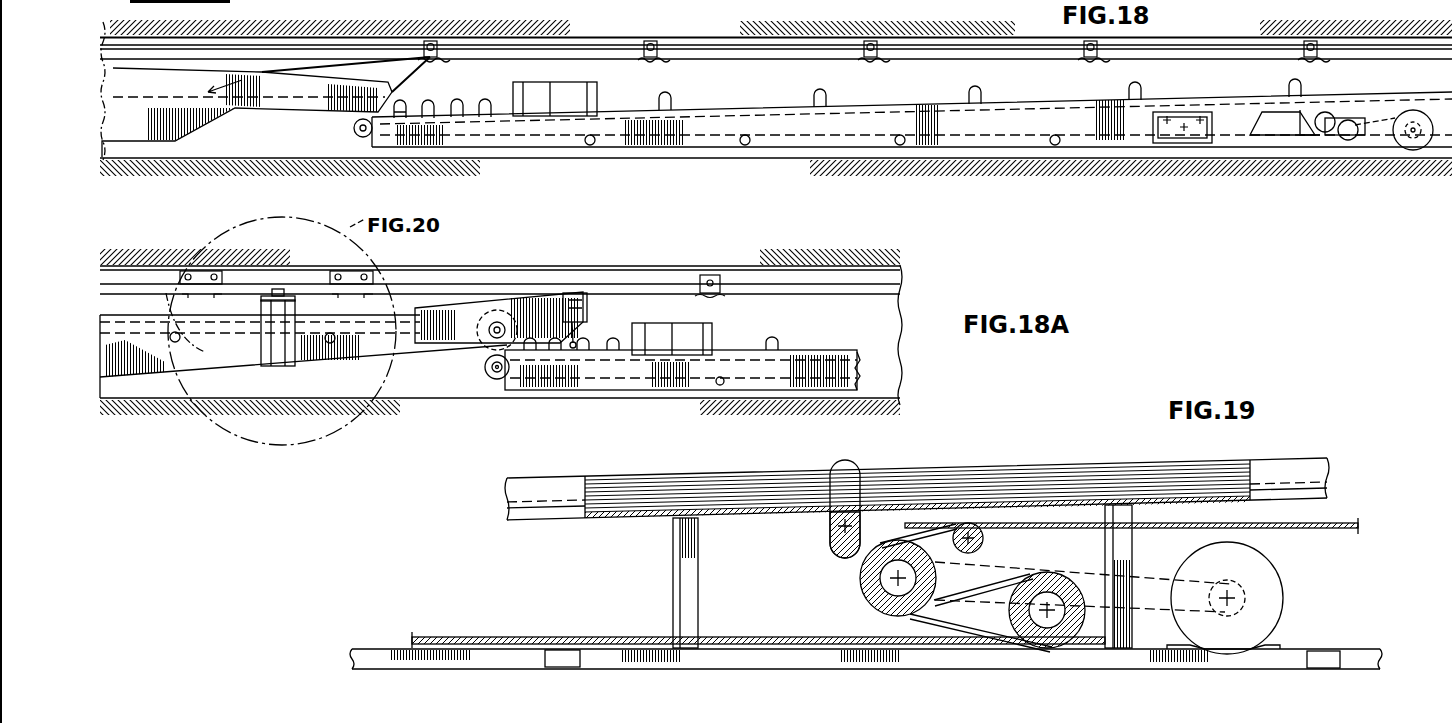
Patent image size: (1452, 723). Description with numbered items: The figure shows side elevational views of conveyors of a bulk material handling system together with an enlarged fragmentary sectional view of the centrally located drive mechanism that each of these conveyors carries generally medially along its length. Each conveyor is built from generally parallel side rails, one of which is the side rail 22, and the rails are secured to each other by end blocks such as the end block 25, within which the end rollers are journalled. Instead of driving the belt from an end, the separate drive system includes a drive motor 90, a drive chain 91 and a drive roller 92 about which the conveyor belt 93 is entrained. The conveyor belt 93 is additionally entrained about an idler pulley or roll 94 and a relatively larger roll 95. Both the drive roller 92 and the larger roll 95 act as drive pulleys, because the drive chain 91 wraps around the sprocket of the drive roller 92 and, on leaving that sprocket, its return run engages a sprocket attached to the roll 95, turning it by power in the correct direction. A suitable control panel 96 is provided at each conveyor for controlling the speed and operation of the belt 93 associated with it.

In FIG. 18A, the side rail 22 is at (602, 277).
In FIG. 18A, the end block 25 is at (737, 262).
In FIG. 18, the drive motor 90 is at (1405, 150).
In FIG. 19, the drive motor 90 is at (1262, 572).
In FIG. 19, the drive chain 91 is at (1140, 573).
In FIG. 19, the drive roller 92 is at (870, 584).
In FIG. 19, the conveyor belt 93 is at (780, 512).
In FIG. 19, the idler pulley 94 is at (990, 525).
In FIG. 19, the roll 95 is at (1052, 575).
In FIG. 18, the control panel 96 is at (1175, 145).